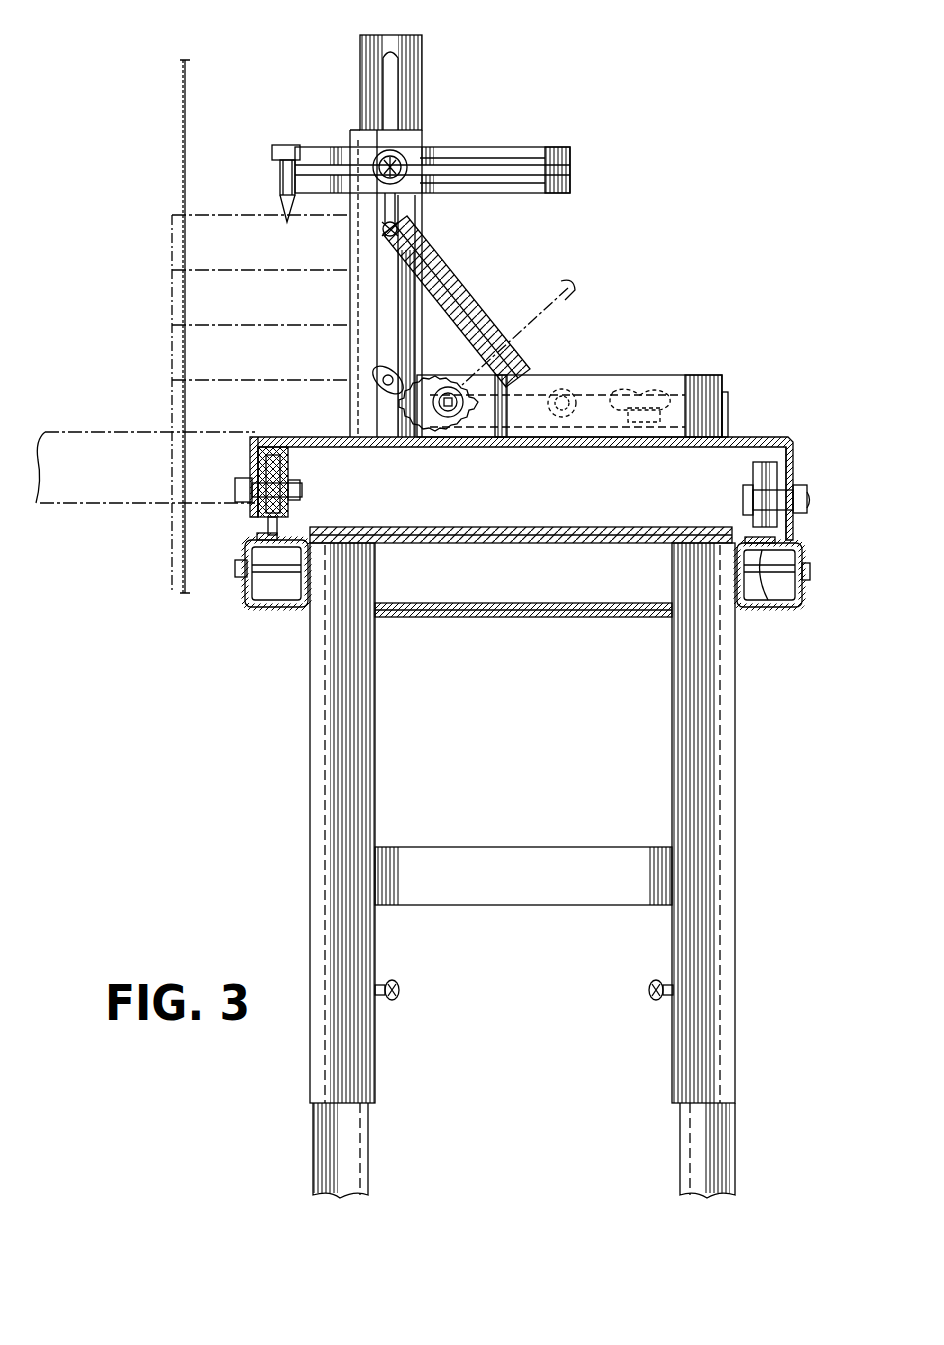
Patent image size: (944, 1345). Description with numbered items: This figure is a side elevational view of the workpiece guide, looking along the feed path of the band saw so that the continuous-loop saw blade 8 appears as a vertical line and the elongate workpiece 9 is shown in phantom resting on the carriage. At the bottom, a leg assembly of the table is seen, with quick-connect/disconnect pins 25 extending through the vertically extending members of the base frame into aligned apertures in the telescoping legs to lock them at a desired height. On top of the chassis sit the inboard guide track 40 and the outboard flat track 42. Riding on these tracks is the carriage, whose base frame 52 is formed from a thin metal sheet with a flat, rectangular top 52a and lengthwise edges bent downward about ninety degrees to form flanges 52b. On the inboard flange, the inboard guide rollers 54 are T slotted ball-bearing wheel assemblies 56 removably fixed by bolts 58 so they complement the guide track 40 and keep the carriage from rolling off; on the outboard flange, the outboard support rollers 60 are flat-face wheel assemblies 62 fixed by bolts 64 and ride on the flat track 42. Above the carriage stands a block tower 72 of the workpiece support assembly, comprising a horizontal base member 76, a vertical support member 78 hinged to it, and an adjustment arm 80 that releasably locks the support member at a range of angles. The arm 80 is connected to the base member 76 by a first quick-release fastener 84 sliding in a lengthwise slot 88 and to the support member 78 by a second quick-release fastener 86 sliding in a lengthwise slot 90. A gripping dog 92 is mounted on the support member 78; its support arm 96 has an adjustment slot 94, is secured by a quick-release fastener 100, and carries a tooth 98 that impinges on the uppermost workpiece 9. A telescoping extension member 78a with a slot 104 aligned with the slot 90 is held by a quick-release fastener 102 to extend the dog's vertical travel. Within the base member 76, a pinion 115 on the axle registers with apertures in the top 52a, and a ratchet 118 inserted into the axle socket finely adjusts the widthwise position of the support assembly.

The continuous-loop saw blade 8 is at (185, 165).
The elongate workpiece 9 is at (172, 240).
The quick-connect/disconnect pins 25 is at (396, 983).
The guide track section 40 is at (270, 520).
The flat track section 42 is at (775, 600).
The base frame 52 is at (507, 415).
The top 52a is at (750, 437).
The flanges 52b is at (793, 457).
The inboard guide rollers 54 is at (283, 508).
The T slotted ball-bearing wheel assemblies 56 is at (293, 462).
The bolts 58 is at (300, 488).
The outboard support rollers 60 is at (760, 473).
The wheel assemblies 62 is at (740, 500).
The bolts 64 is at (803, 512).
The block tower 72 is at (423, 241).
The horizontal base member 76 is at (572, 376).
The vertical support member 78 is at (396, 221).
The telescoping extension member 78a is at (417, 35).
The adjustment arm 80 is at (480, 300).
The first quick-release fastener 84 is at (565, 390).
The second quick-release fastener 86 is at (396, 230).
The lengthwise-extending slot 88 is at (603, 400).
The lengthwise-extending slot 90 is at (392, 197).
The gripping dog 92 is at (426, 153).
The adjustment slot 94 is at (466, 139).
The support arm 96 is at (507, 157).
The tooth 98 is at (280, 197).
The quick-release fastener 100 is at (382, 158).
The quick-release fastener 102 is at (370, 385).
The lengthwise-extending slot 104 is at (387, 73).
The pinion 115 is at (446, 440).
The ratchet 118 is at (560, 290).